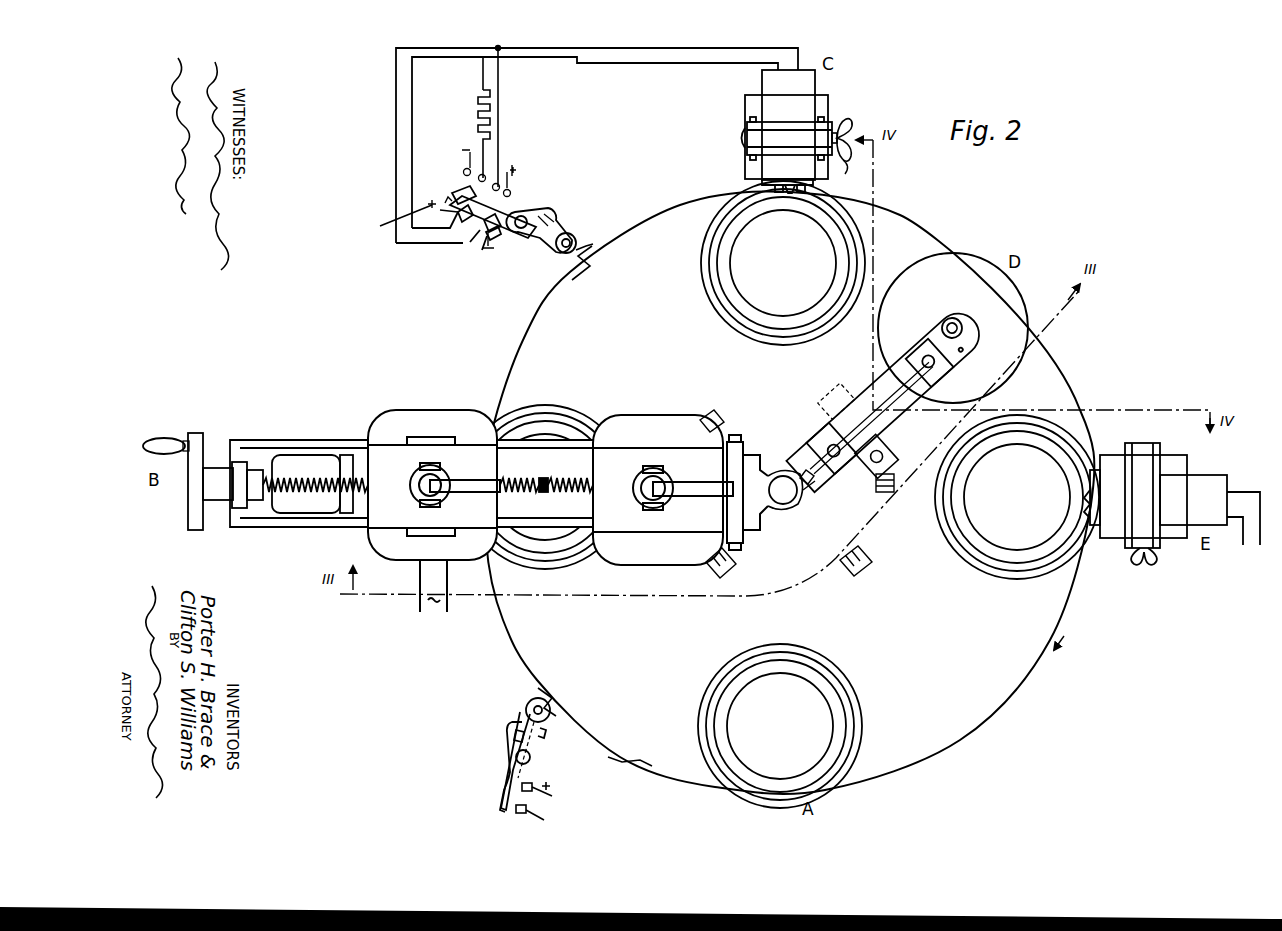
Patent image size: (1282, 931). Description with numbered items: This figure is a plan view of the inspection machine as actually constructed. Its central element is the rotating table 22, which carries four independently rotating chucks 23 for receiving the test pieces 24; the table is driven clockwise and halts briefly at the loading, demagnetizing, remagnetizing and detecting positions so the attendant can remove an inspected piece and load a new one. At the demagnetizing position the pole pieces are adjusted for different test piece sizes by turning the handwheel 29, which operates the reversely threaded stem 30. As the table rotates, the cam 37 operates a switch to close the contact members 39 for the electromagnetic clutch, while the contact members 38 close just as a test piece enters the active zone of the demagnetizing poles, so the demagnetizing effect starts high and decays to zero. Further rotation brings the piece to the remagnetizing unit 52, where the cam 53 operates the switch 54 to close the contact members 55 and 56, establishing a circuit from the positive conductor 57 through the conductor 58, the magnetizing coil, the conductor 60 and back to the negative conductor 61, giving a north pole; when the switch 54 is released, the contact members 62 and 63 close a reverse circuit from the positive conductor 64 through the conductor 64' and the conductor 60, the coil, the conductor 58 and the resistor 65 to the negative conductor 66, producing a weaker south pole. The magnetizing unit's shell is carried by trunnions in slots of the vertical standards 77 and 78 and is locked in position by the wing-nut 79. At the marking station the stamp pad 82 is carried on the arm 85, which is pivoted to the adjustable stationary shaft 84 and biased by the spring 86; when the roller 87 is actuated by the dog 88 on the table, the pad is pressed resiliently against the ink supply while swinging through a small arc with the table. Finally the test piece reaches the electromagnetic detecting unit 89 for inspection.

The rotating table 22 is at (968, 754).
The chucks 23 is at (702, 274).
The test pieces 24 is at (746, 318).
The handwheel 29 is at (190, 520).
The reversely threaded stem 30 is at (308, 456).
The cam 37 is at (538, 688).
The contact members 38 is at (501, 767).
The contact members 39 is at (530, 804).
The remagnetizing unit 52 is at (786, 131).
The cam 53 is at (590, 244).
The switch 54 is at (542, 212).
The contact members 55 is at (478, 240).
The contact members 56 is at (448, 209).
The positive conductor 57 is at (396, 220).
The conductor 58 is at (412, 158).
The conductor 60 is at (396, 131).
The negative conductor 61 is at (492, 240).
The contact members 62 is at (516, 168).
The contact members 63 is at (484, 174).
The positive conductor 64 is at (523, 186).
The conductor 64' is at (515, 146).
The resistor 65 is at (478, 110).
The negative conductor 66 is at (464, 164).
The vertical standard 77 is at (747, 128).
The vertical standard 78 is at (834, 128).
The wing-nut 79 is at (841, 172).
The stamp pad 82 is at (952, 255).
The adjustable stationary shaft 84 is at (783, 498).
The arm 85 is at (852, 393).
The spring 86 is at (816, 496).
The roller 87 is at (886, 462).
The dog 88 is at (888, 493).
The electromagnetic detecting unit 89 is at (1172, 504).